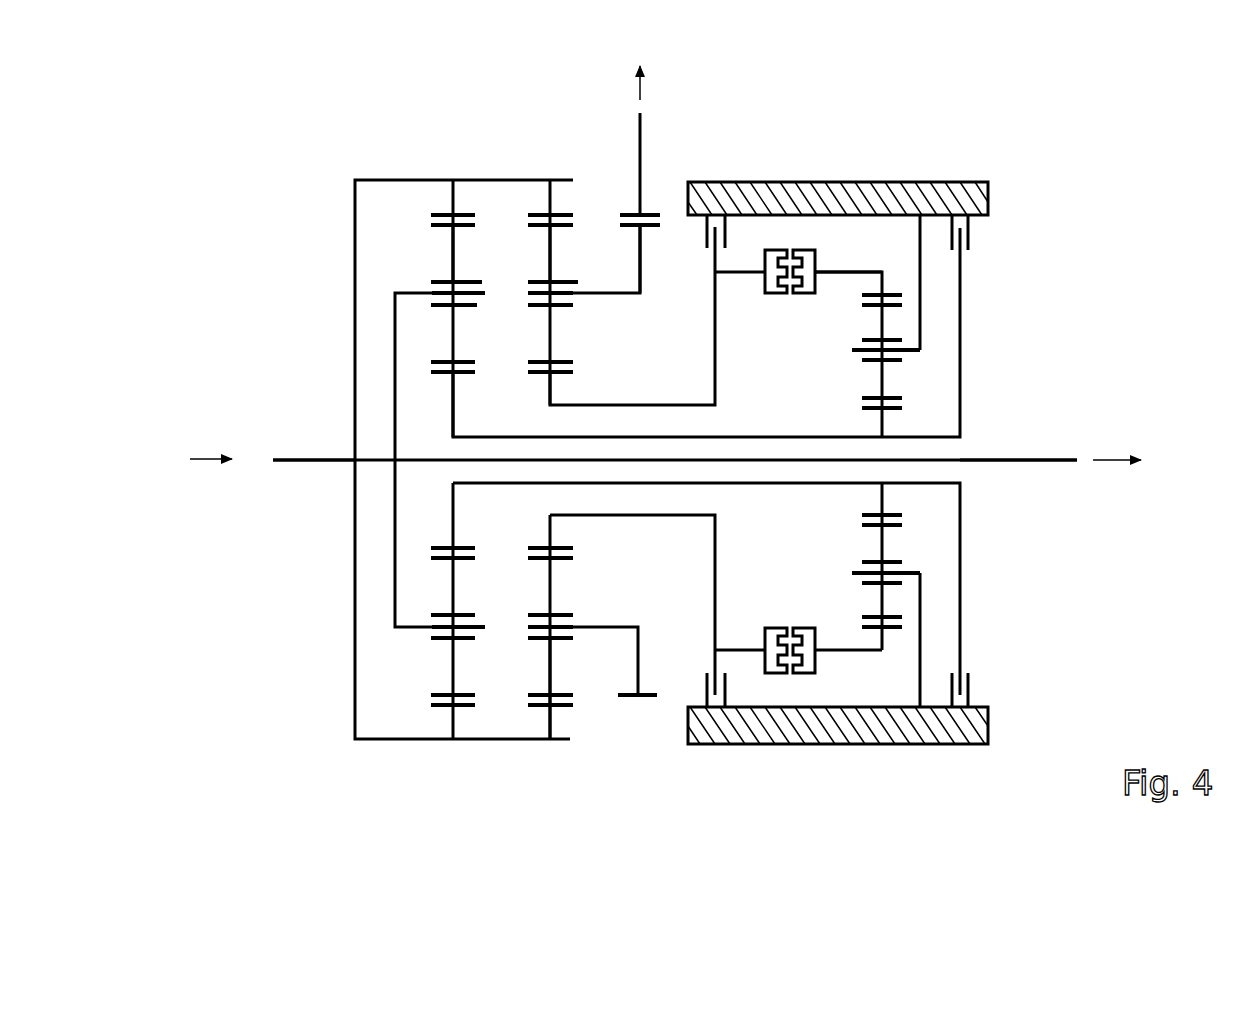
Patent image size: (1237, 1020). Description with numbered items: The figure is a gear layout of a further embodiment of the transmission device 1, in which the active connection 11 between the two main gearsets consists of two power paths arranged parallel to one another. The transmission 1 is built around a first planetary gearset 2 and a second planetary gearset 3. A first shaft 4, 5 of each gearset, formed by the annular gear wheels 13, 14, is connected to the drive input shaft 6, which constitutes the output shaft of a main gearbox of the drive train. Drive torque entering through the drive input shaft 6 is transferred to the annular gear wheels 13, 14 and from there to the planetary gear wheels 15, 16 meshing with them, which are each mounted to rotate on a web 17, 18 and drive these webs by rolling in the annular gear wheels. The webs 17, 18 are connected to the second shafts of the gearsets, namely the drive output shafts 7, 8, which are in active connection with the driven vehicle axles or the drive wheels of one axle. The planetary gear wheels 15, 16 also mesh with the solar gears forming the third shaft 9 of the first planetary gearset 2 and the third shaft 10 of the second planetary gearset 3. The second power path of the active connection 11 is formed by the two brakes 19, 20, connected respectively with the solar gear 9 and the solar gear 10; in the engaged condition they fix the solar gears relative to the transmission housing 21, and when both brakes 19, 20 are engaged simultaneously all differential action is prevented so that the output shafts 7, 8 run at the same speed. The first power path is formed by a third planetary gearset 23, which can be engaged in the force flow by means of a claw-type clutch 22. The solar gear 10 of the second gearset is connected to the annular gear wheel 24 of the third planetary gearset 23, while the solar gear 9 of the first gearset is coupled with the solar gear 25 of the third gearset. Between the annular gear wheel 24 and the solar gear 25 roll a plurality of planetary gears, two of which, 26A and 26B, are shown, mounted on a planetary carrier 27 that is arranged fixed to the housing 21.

The transmission device 1 is at (1107, 160).
The first planetary gearset 2 is at (362, 382).
The second planetary gearset 3 is at (574, 677).
The first shaft of the first planetary gearset 4 is at (448, 192).
The first shaft of the second planetary gearset 5 is at (546, 192).
The drive input shaft 6 is at (302, 470).
The drive output shaft 7 is at (1072, 473).
The drive output shaft 8 is at (650, 256).
The third shaft of the first planetary gearset 9 is at (441, 426).
The third shaft of the second planetary gearset 10 is at (578, 533).
The active connection 11 is at (872, 758).
The annular gear wheel 13 is at (457, 206).
The annular gear wheel 14 is at (552, 206).
The planetary gear wheel 15 is at (451, 262).
The planetary gear wheel 16 is at (549, 262).
The web 17 is at (394, 330).
The web 18 is at (607, 292).
The brake 19 is at (734, 230).
The brake 20 is at (982, 688).
The housing 21 is at (797, 203).
The claw-type clutch 22 is at (788, 314).
The third planetary gearset 23 is at (924, 374).
The annular gear wheel of the third planetary gearset 24 is at (862, 268).
The solar gear of the third planetary gearset 25 is at (880, 503).
The planetary gear 26A is at (883, 322).
The planetary gear 26B is at (880, 553).
The planetary carrier 27 is at (920, 260).